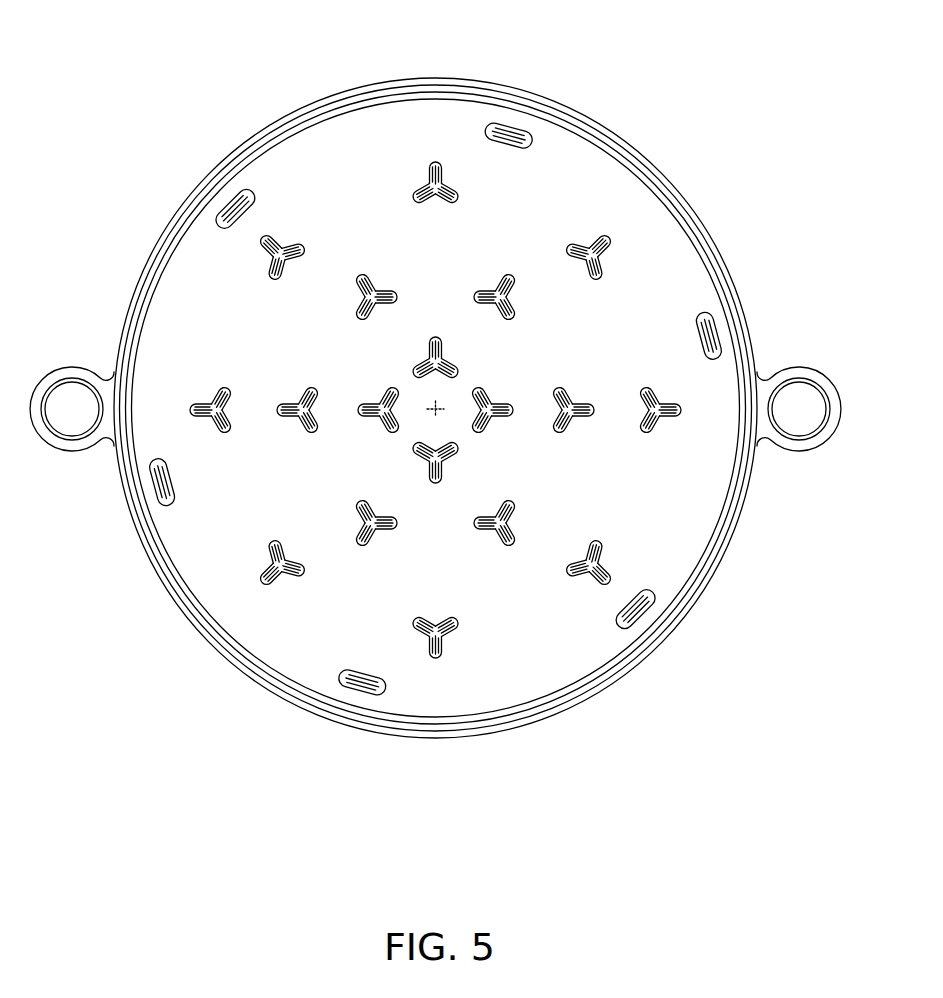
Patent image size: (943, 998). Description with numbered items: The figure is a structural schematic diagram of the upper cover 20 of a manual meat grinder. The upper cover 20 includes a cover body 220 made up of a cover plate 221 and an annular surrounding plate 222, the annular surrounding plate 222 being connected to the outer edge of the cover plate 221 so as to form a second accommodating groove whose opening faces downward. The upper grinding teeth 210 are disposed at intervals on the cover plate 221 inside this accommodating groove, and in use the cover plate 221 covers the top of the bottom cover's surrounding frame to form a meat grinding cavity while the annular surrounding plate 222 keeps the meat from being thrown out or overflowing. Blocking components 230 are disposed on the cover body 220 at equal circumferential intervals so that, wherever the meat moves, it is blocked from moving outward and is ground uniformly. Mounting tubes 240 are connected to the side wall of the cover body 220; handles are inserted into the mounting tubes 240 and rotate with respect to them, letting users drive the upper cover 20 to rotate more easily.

The upper cover 20 is at (443, 32).
The upper grinding teeth 210 is at (302, 253).
The cover body 220 is at (479, 408).
The cover plate 221 is at (751, 188).
The annular surrounding plate 222 is at (675, 200).
The blocking components 230 is at (513, 138).
The mounting tube 240 is at (64, 448).